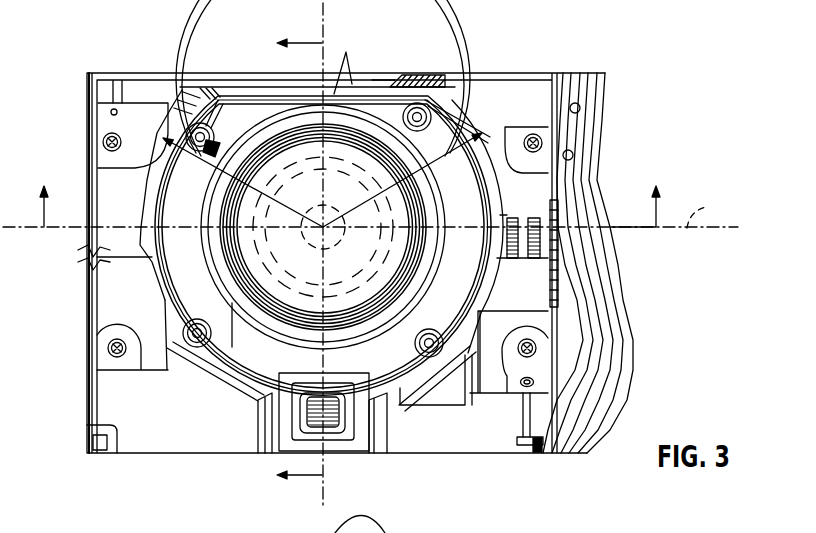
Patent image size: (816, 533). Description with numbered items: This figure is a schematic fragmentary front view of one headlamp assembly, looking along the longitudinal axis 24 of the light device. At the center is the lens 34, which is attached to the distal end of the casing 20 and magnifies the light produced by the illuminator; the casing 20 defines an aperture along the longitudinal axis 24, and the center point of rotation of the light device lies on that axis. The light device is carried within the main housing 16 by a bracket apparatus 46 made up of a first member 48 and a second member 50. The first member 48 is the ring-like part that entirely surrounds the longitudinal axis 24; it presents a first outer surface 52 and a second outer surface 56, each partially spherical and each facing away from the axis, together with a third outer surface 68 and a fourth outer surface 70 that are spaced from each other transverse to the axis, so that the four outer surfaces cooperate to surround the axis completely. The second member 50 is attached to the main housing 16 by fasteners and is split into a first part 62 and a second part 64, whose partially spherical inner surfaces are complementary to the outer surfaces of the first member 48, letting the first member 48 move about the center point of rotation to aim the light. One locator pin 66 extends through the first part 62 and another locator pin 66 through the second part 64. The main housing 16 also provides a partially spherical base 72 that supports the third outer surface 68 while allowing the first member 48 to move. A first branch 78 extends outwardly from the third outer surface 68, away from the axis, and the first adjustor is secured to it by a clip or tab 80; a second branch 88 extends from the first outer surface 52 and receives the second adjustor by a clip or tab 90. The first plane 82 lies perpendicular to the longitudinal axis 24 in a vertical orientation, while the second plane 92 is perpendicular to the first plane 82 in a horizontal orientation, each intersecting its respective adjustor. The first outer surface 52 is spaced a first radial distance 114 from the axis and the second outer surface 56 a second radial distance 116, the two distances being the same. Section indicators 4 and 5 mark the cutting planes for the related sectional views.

The section line 4- 4 is at (289, 261).
The section line 5- 5 is at (351, 190).
The main housing 16 is at (525, 85).
The casing 20 is at (232, 347).
The longitudinal axis 24 is at (306, 242).
The lens 34 is at (246, 217).
The bracket apparatus 46 is at (182, 91).
The first member 48 is at (102, 143).
The second member 50 is at (110, 295).
The first outer surface 52 is at (472, 120).
The second outer surface 56 is at (180, 108).
The first part 62 is at (563, 175).
The second part 64 is at (80, 258).
The locator pin 66 is at (110, 111).
The third outer surface 68 is at (402, 395).
The fourth outer surface 70 is at (226, 98).
The base 72 is at (262, 400).
The first branch 78 is at (272, 436).
The clip or tab 80 is at (335, 427).
The first plane 82 is at (370, 88).
The second branch 88 is at (558, 215).
The clip or tab 90 is at (518, 270).
The second plane 92 is at (706, 210).
The first radial distance 114 is at (446, 190).
The second radial distance 116 is at (213, 130).